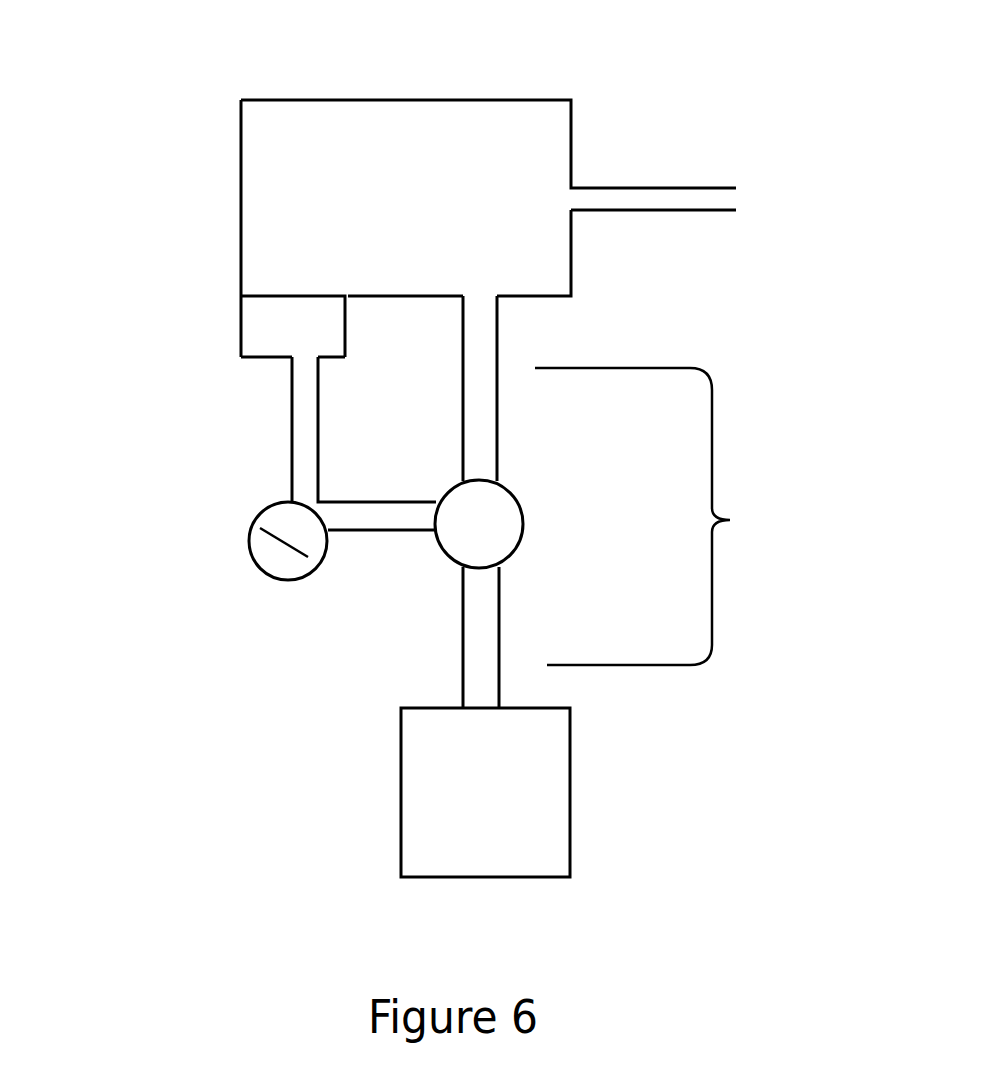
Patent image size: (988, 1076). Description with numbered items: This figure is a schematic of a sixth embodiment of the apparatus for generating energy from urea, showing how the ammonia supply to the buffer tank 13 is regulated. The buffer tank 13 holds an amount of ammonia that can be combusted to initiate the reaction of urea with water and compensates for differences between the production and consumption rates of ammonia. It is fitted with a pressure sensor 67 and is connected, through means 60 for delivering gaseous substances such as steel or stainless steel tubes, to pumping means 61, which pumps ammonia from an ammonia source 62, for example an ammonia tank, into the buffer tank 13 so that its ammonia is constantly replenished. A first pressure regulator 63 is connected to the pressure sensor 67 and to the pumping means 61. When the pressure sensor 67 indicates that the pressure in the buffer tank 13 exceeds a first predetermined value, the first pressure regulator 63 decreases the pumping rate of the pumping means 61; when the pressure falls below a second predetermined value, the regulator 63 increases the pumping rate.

The buffer tank 13 is at (488, 228).
The means for delivering gaseous substances 60 is at (639, 172).
The pumping means 61 is at (550, 528).
The ammonia source 62 is at (485, 792).
The first pressure regulator 63 is at (237, 532).
The pressure sensor 67 is at (208, 334).